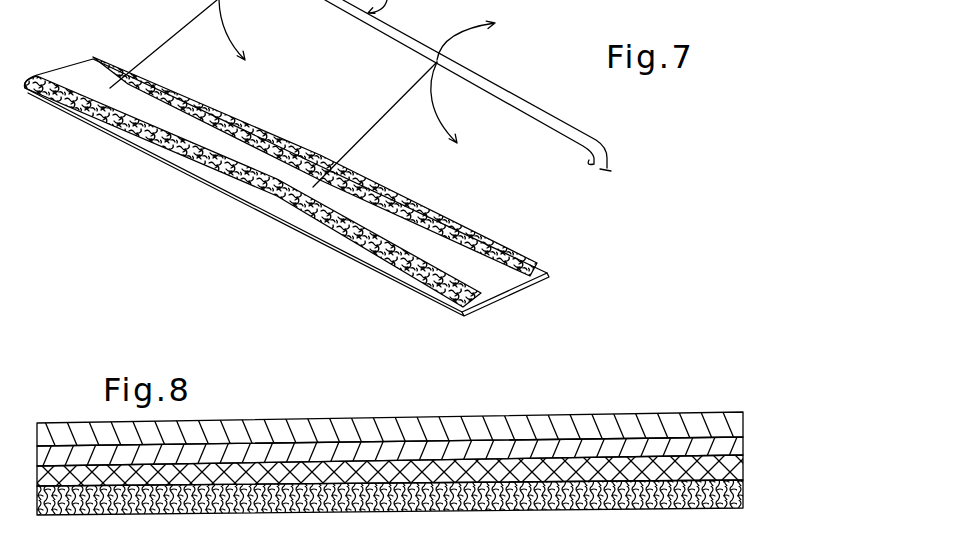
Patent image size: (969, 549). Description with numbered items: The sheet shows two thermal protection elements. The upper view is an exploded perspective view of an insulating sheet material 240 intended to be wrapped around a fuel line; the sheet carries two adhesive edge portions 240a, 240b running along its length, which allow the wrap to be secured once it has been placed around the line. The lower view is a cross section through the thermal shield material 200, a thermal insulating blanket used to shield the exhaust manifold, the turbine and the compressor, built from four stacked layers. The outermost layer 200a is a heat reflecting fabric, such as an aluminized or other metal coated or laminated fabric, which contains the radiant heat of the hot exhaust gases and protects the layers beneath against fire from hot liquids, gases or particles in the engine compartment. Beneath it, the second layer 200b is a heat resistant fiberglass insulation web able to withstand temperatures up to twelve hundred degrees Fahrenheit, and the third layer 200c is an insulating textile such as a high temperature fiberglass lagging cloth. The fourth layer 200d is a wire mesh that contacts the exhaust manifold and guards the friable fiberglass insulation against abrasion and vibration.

In FIG. 7, the insulating sheet material 240 is at (77, 68).
In FIG. 7, the adhesive edge portion 240a is at (430, 294).
In FIG. 7, the adhesive edge portion 240b is at (510, 254).
In FIG. 8, the thermal shield material 200 is at (434, 418).
In FIG. 8, the outermost layer 200a is at (743, 417).
In FIG. 8, the second layer 200b is at (745, 444).
In FIG. 8, the third layer 200c is at (740, 472).
In FIG. 8, the fourth layer 200d is at (743, 500).